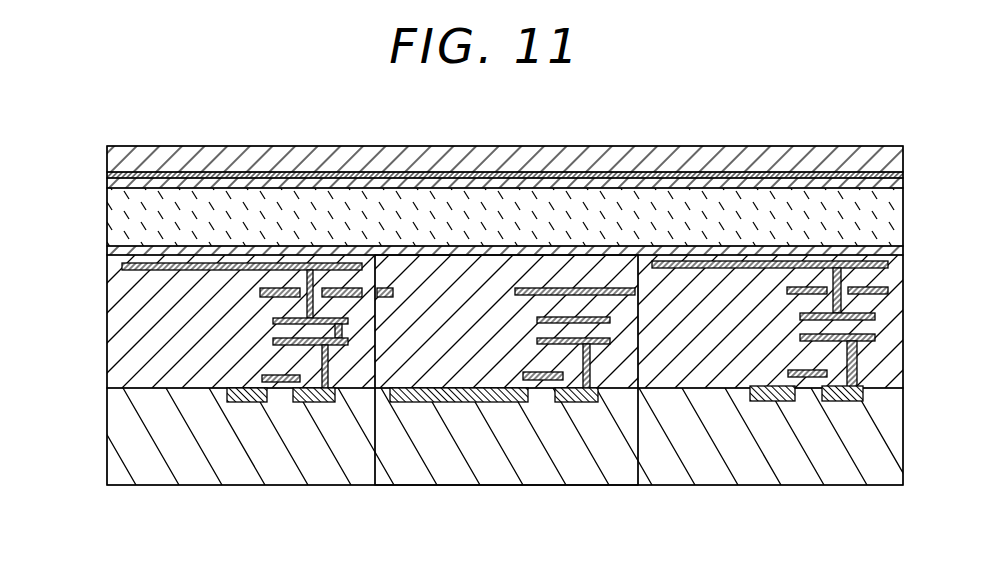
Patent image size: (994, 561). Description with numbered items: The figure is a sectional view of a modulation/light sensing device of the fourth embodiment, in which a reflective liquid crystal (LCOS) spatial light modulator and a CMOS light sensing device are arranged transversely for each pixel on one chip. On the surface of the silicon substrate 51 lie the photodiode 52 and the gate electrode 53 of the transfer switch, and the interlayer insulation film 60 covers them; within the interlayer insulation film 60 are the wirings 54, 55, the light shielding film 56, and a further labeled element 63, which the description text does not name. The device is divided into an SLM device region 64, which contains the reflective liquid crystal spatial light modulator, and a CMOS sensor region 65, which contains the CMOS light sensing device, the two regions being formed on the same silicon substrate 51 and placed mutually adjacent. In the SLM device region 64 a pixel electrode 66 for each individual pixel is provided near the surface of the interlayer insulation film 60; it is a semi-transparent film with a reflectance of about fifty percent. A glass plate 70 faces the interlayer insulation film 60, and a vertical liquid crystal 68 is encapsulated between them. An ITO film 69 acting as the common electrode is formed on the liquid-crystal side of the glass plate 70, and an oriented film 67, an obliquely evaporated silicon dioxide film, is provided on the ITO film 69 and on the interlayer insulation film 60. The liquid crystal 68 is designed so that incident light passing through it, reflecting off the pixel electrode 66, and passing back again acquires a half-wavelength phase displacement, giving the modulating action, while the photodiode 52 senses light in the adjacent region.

The silicon substrate 51 is at (117, 437).
The photodiode 52 is at (467, 402).
The gate electrode 53 is at (528, 373).
The wiring 54 is at (518, 357).
The wiring 55 is at (277, 369).
The light shielding film 56 is at (260, 293).
The interlayer insulation film 60 is at (122, 353).
The contact plug 63 is at (262, 378).
The SLM device region 64 is at (375, 494).
The CMOS sensor region 65 is at (638, 494).
The pixel electrode 66 is at (150, 272).
The oriented film 67 is at (107, 183).
The liquid crystal 68 is at (122, 218).
The ITO film 69 is at (208, 176).
The glass plate 70 is at (278, 158).